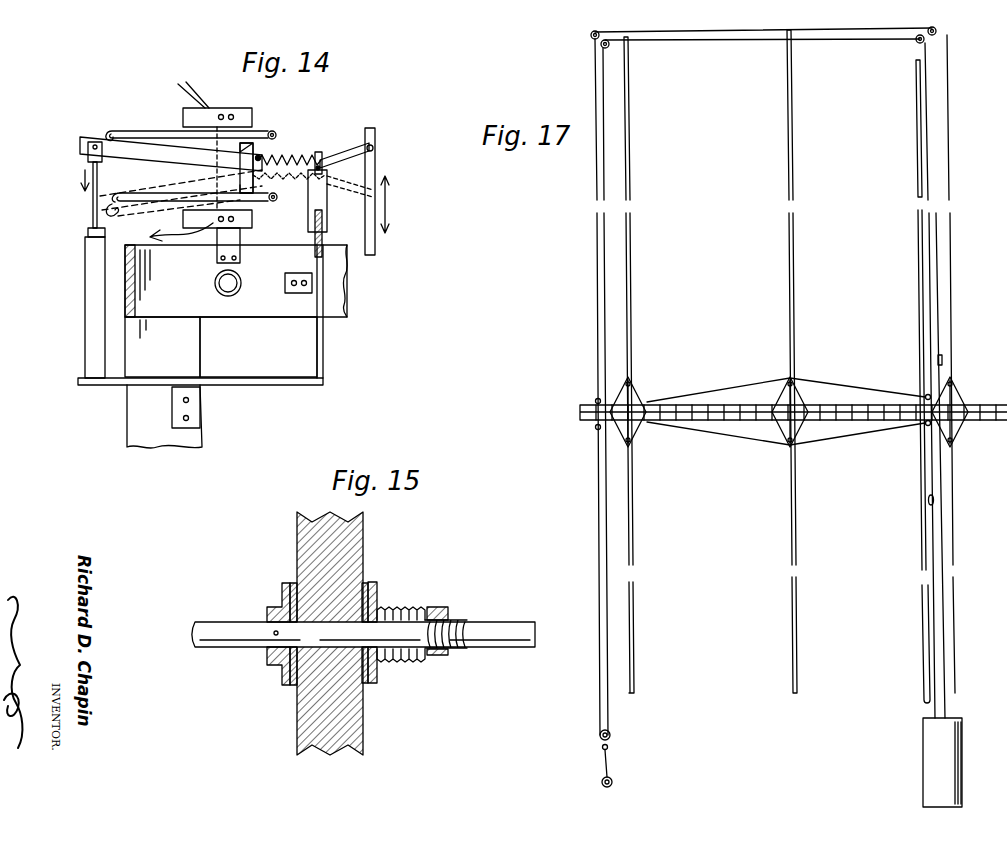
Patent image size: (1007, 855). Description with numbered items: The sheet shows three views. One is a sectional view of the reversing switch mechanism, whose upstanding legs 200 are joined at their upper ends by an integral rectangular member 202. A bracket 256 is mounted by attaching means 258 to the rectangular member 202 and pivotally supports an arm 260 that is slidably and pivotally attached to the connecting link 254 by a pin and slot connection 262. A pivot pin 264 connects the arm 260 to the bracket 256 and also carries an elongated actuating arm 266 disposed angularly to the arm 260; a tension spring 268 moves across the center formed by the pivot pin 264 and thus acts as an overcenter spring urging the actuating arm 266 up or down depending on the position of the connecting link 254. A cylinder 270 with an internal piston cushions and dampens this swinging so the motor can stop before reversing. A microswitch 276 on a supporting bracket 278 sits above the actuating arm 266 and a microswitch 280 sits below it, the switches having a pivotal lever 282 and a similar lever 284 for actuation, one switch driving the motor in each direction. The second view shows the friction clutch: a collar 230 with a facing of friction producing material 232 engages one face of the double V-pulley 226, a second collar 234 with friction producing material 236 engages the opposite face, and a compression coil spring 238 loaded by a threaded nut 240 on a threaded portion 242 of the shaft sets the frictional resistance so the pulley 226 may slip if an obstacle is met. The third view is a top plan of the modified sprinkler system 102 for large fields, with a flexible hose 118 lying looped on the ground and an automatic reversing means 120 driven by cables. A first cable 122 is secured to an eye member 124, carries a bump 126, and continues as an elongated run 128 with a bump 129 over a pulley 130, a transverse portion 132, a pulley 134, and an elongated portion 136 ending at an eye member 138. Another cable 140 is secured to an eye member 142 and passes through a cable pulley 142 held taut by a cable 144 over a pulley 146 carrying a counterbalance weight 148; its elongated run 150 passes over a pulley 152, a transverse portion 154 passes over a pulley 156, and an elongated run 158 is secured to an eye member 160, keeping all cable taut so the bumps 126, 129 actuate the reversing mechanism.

In FIG. 17, the modified form of sprinkler system 102 is at (711, 378).
In FIG. 17, the flexible hose 118 is at (920, 280).
In FIG. 17, the automatic reversing means 120 is at (971, 730).
In FIG. 17, the first cable 122 is at (930, 608).
In FIG. 17, the eye member 124 is at (926, 425).
In FIG. 17, the bump 126 is at (928, 502).
In FIG. 17, the continuous elongated run 128 is at (942, 304).
In FIG. 17, the bump 129 is at (942, 358).
In FIG. 17, the pulley 130 is at (936, 31).
In FIG. 17, the continuous transverse portion 132 is at (707, 34).
In FIG. 17, the pulley 134 is at (591, 36).
In FIG. 17, the elongated portion 136 is at (594, 258).
In FIG. 17, the eye member 138 is at (596, 399).
In FIG. 17, the cable 140 is at (598, 545).
In FIG. 17, the cable pulley 142 is at (596, 428).
In FIG. 17, the cable 144 is at (610, 766).
In FIG. 17, the pulley 146 is at (604, 778).
In FIG. 17, the counterbalance weight 148 is at (602, 786).
In FIG. 17, the elongated run 150 is at (605, 487).
In FIG. 17, the pulley 152 is at (609, 46).
In FIG. 17, the transverse continuous cable portion 154 is at (822, 41).
In FIG. 17, the pulley 156 is at (917, 42).
In FIG. 17, the elongated run 158 is at (919, 130).
In FIG. 17, the eye member 160 is at (926, 395).
In FIG. 14, the upstanding legs 200 is at (160, 437).
In FIG. 14, the rectangular member 202 is at (343, 303).
In FIG. 15, the double V-pulley 226 is at (305, 540).
In FIG. 15, the collar 230 is at (272, 660).
In FIG. 15, the friction producing material 232 is at (293, 688).
In FIG. 15, the second collar 234 is at (377, 600).
In FIG. 15, the friction producing material 236 is at (366, 585).
In FIG. 15, the compression coil spring 238 is at (410, 612).
In FIG. 15, the threaded nut 240 is at (440, 657).
In FIG. 15, the threaded portion 242 is at (462, 625).
In FIG. 14, the connecting link 254 is at (375, 250).
In FIG. 14, the bracket 256 is at (323, 385).
In FIG. 14, the attaching means 258 is at (297, 294).
In FIG. 14, the arm 260 is at (351, 152).
In FIG. 14, the pin and slot connection 262 is at (372, 150).
In FIG. 14, the pivot pin 264 is at (318, 163).
In FIG. 14, the actuating arm 266 is at (139, 146).
In FIG. 14, the tension spring 268 is at (288, 154).
In FIG. 14, the cylinder 270 is at (90, 288).
In FIG. 14, the microswitch 276 is at (208, 112).
In FIG. 14, the supporting bracket 278 is at (241, 250).
In FIG. 14, the microswitch 280 is at (207, 240).
In FIG. 14, the pivotal lever 282 is at (125, 129).
In FIG. 14, the lever 284 is at (121, 207).